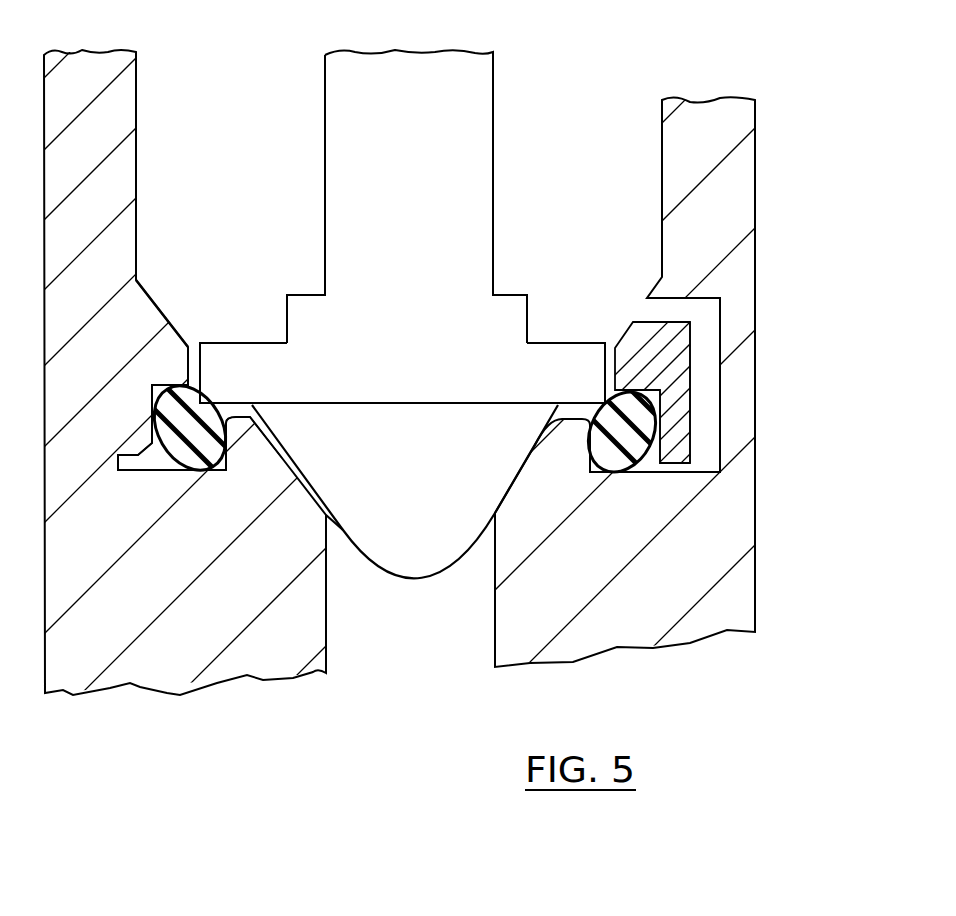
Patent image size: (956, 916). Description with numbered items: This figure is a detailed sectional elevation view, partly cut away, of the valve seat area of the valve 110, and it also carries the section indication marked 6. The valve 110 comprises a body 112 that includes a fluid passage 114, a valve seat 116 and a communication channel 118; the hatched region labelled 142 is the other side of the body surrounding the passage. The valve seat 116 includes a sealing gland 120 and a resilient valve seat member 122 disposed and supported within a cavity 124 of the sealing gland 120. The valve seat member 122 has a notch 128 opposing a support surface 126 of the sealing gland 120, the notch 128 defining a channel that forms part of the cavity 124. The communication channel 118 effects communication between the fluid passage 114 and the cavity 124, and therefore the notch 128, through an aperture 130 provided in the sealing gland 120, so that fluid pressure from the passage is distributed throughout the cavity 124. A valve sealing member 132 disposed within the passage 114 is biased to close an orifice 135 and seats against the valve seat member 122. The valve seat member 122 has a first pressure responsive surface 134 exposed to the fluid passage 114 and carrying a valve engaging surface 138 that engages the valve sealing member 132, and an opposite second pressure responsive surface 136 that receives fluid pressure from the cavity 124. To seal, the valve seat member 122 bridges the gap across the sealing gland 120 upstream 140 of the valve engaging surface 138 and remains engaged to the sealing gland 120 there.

The valve 110 is at (782, 222).
The body 112 is at (727, 143).
The fluid passage 114 is at (596, 157).
The valve seat 116 is at (660, 478).
The communication channel 118 is at (705, 330).
The sealing gland 120 is at (640, 467).
The resilient valve seat member 122 is at (200, 452).
The cavity 124 is at (145, 458).
The support surface 126 is at (665, 370).
The notch 128 is at (663, 415).
The aperture 130 is at (697, 466).
The valve sealing member 132 is at (419, 378).
The first pressure responsive surface 134 is at (222, 413).
The orifice 135 is at (336, 534).
The second pressure responsive surface 136 is at (165, 385).
The valve engaging surface 138 is at (200, 398).
The upstream 140 is at (421, 660).
The upper chamber 142 is at (226, 152).
The section line 6- 6 is at (548, 490).